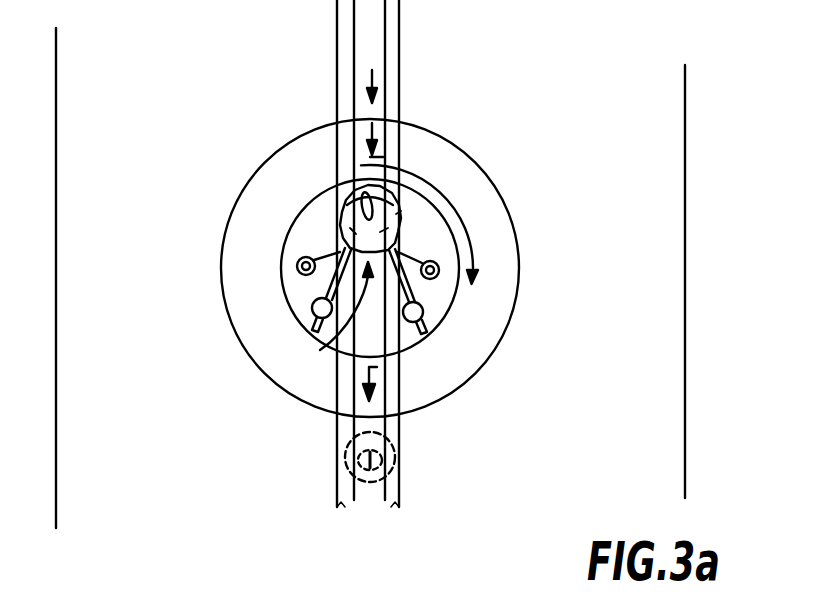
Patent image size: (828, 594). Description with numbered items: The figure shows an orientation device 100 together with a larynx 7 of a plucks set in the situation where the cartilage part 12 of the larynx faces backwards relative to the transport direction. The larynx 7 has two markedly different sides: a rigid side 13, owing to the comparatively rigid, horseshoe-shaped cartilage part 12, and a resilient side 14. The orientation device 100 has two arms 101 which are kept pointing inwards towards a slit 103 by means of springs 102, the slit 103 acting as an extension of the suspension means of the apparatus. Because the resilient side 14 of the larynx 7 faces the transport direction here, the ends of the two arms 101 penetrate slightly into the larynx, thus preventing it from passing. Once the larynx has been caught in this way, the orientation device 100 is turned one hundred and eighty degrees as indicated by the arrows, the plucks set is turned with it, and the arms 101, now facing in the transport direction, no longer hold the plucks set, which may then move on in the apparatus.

The orientation device 100 is at (530, 125).
The cartilage part 12 is at (347, 198).
The rigid side 13 is at (396, 172).
The larynx 7 is at (386, 214).
The springs 102 is at (334, 266).
The arms 101 is at (328, 284).
The resilient side 14 is at (320, 350).
The slit 103 is at (370, 320).